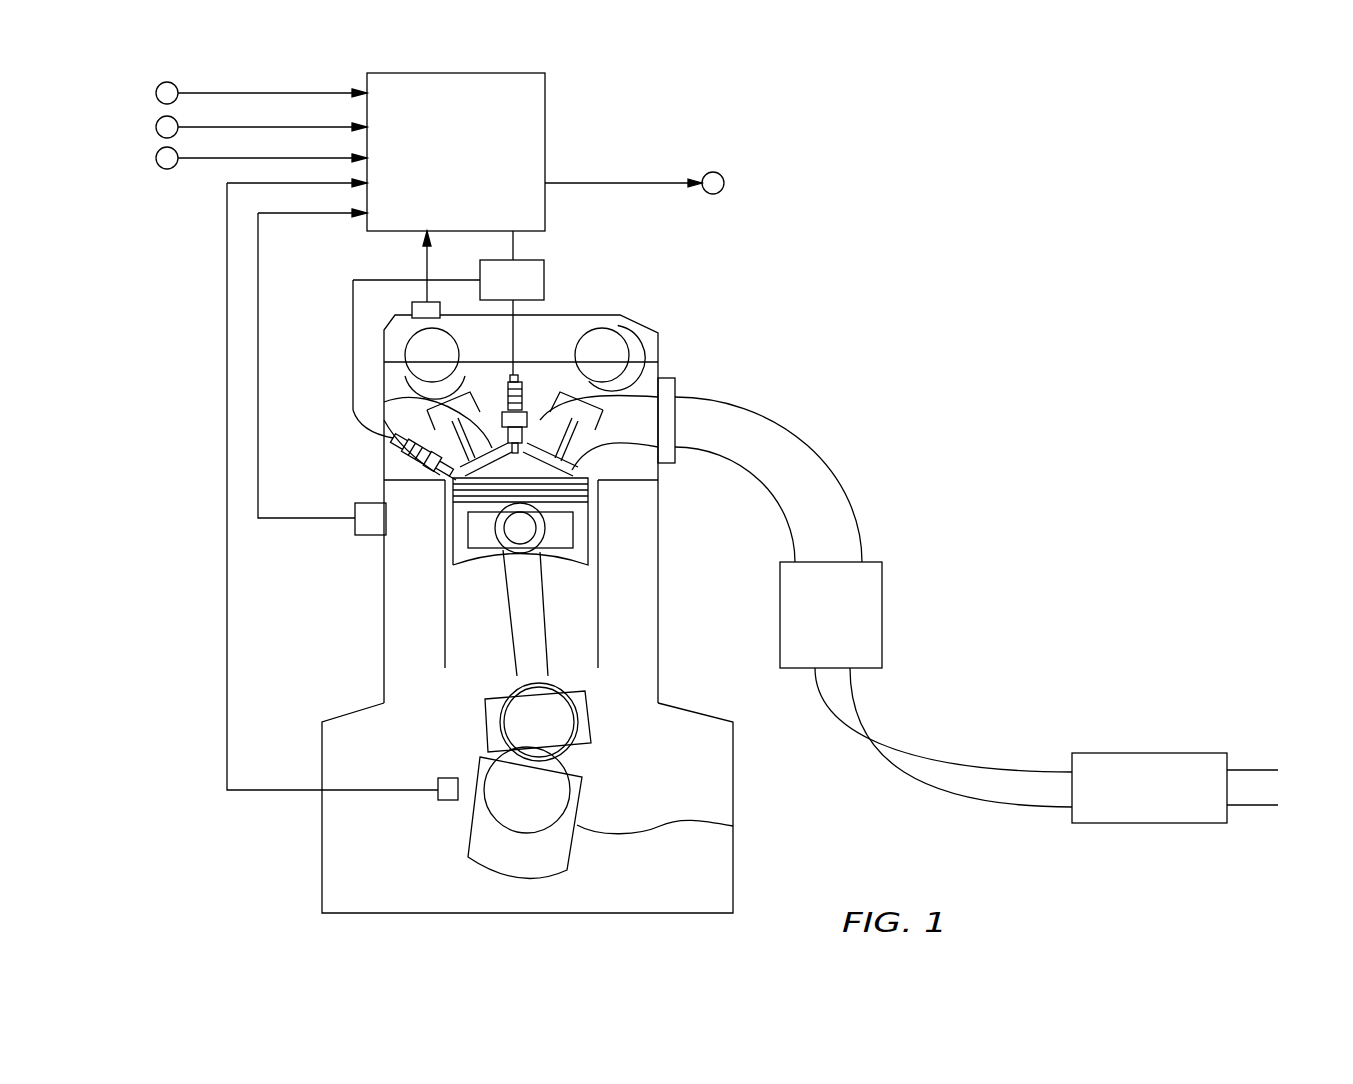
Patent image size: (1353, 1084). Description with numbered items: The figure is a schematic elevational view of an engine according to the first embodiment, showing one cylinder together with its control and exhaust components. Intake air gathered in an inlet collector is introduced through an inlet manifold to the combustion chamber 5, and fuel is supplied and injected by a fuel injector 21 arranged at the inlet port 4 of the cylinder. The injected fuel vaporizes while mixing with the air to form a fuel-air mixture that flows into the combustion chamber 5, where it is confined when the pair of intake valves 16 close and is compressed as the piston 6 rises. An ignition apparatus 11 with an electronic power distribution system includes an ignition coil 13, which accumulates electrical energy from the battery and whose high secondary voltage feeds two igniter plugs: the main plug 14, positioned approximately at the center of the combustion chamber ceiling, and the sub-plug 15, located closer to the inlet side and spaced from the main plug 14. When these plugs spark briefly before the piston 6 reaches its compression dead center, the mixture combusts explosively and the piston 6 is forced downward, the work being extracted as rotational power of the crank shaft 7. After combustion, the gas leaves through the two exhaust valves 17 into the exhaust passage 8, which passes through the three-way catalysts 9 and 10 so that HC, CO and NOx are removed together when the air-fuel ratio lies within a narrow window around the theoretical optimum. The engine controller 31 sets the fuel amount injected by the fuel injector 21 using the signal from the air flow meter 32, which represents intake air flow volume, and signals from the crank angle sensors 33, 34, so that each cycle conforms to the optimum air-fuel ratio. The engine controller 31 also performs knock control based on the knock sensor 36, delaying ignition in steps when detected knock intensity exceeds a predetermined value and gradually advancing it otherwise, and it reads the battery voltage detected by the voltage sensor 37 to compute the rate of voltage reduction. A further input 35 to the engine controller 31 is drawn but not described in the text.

The inlet port 4 is at (400, 403).
The combustion chamber 5 is at (593, 500).
The piston 6 is at (583, 545).
The crank shaft 7 is at (570, 820).
The exhaust passage 8 is at (817, 478).
The three-way catalyst 9 is at (868, 623).
The three-way catalyst 10 is at (1142, 768).
The ignition apparatus 11 is at (560, 257).
The ignition coil 13 is at (538, 276).
The main plug 14 is at (596, 325).
The sub-plug 15 is at (413, 460).
The intake valves 16 is at (387, 428).
The exhaust valves 17 is at (600, 440).
The fuel injector 21 is at (724, 185).
The engine controller 31 is at (525, 112).
The air flow meter 32 is at (156, 93).
The crank angle sensor 33 is at (447, 802).
The crank angle sensor 34 is at (412, 309).
The sensor 35 is at (156, 127).
The knock sensor 36 is at (363, 537).
The voltage sensor 37 is at (156, 158).